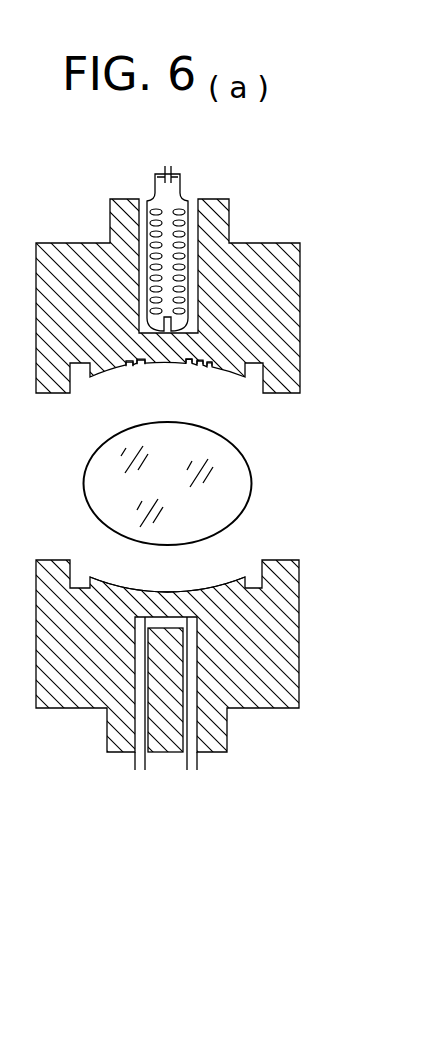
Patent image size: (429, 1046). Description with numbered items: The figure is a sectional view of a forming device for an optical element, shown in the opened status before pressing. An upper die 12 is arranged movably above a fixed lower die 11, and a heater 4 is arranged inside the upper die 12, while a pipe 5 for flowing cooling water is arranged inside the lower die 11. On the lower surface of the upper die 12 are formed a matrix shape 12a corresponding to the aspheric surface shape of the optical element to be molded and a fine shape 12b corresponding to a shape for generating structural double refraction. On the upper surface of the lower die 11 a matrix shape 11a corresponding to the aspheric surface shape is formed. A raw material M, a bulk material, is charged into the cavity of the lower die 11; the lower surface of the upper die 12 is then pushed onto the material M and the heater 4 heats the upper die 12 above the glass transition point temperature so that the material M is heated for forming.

The heater 4 is at (155, 185).
The pipe 5 is at (134, 762).
The lower die 11 is at (282, 628).
The matrix shape 11a is at (213, 583).
The upper die 12 is at (290, 300).
The matrix shape 12a is at (173, 367).
The fine shape 12b is at (131, 367).
The raw material M is at (240, 482).